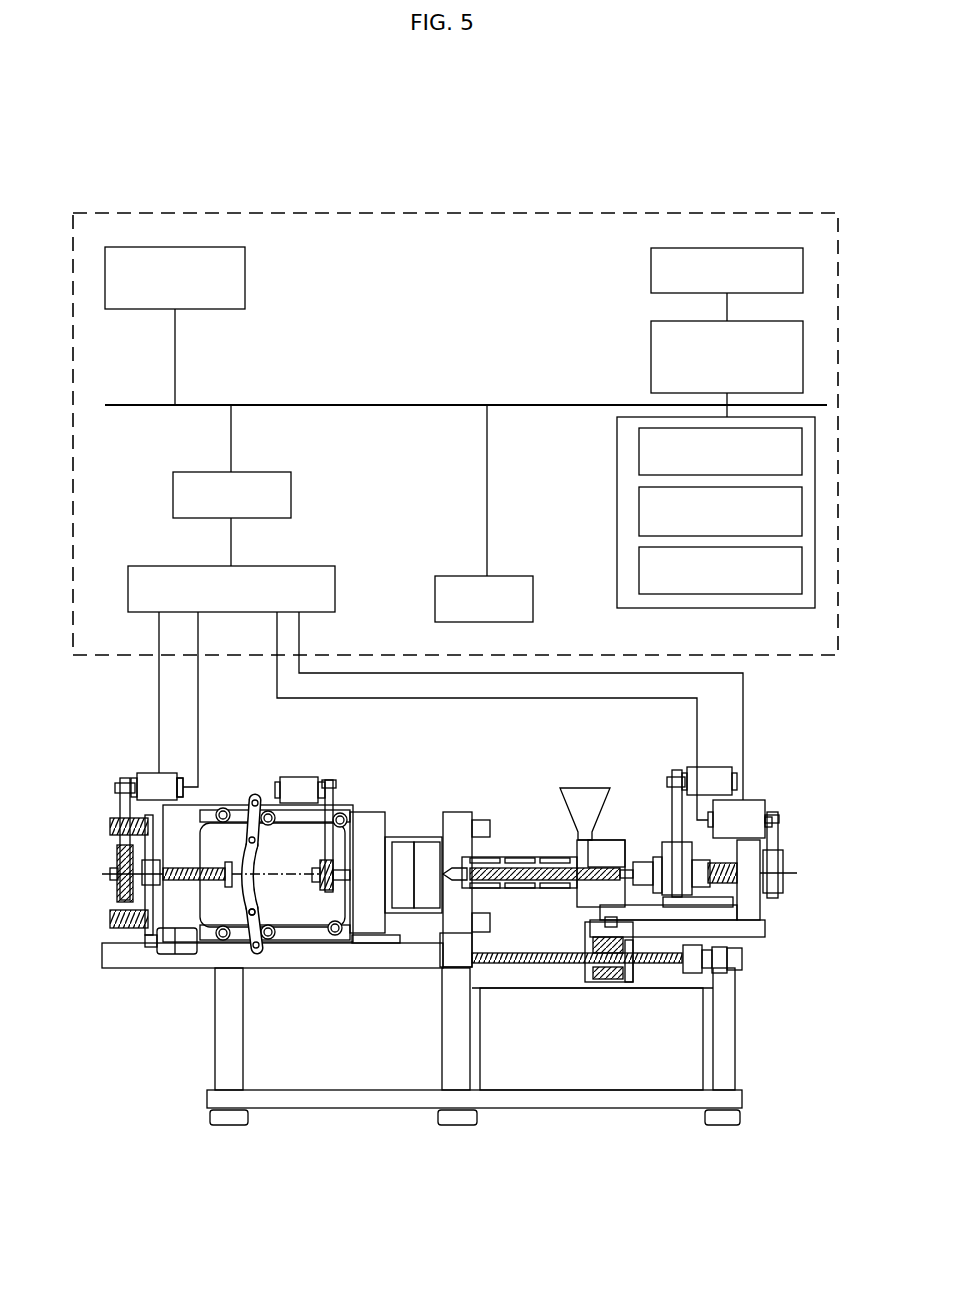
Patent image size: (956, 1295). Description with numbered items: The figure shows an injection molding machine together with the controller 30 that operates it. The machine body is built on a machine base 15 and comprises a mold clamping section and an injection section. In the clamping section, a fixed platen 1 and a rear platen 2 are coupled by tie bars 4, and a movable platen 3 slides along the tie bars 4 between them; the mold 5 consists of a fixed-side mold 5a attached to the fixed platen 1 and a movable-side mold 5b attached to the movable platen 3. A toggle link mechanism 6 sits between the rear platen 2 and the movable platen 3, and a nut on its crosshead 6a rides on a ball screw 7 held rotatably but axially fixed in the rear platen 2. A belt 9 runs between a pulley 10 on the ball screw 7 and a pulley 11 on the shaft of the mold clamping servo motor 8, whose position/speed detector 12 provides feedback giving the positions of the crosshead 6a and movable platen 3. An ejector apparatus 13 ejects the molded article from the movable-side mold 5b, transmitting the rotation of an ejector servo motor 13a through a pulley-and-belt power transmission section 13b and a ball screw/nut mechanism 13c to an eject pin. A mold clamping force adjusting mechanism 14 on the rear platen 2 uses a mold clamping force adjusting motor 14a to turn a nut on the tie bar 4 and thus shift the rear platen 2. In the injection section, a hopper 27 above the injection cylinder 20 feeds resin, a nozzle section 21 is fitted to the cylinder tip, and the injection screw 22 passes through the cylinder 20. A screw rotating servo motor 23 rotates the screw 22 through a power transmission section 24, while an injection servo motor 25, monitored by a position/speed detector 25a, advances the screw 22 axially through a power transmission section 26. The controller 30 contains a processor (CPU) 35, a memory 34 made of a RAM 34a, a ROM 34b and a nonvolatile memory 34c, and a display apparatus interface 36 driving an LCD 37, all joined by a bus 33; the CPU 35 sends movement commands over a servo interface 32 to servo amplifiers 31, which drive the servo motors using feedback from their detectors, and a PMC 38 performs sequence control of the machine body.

The fixed platen 1 is at (468, 812).
The rear platen 2 is at (200, 805).
The movable platen 3 is at (362, 812).
The tie bars 4 is at (420, 943).
The mold 5 is at (438, 780).
The fixed-side mold 5a is at (428, 842).
The movable-side mold 5b is at (402, 842).
The toggle link mechanism 6 is at (262, 870).
The crosshead 6a is at (232, 915).
The ball screw 7 is at (214, 887).
The mold clamping servo motor 8 is at (150, 773).
The belt 9 is at (120, 812).
The pulley 10 is at (117, 895).
The pulley 11 is at (118, 783).
The position/speed detector 12 is at (182, 778).
The ejector apparatus 13 is at (340, 775).
The ejector servo motor 13a is at (300, 777).
The power transmission section 13b is at (316, 873).
The ball screw/nut mechanism 13c is at (318, 890).
The mold clamping force adjusting mechanism 14 is at (122, 938).
The mold clamping force adjusting motor 14a is at (175, 955).
The machine base 15 is at (338, 1108).
The injection cylinder 20 is at (552, 857).
The nozzle section 21 is at (470, 864).
The injection screw 22 is at (532, 880).
The screw rotating servo motor 23 is at (710, 767).
The power transmission section 24 is at (667, 800).
The injection servo motor 25 is at (765, 800).
The position/speed detector 25a is at (708, 835).
The power transmission section 26 is at (785, 835).
The hopper 27 is at (575, 795).
The controller 30 is at (410, 213).
The servo amplifiers 31 is at (335, 590).
The servo interface 32 is at (291, 494).
The bus 33 is at (430, 405).
The memory 34 is at (716, 608).
The RAM 34a is at (639, 449).
The ROM 34b is at (639, 509).
The nonvolatile memory 34c is at (639, 580).
The processor (CPU) 35 is at (245, 278).
The display apparatus interface 36 is at (651, 356).
The LCD 37 is at (651, 273).
The PMC 38 is at (450, 576).